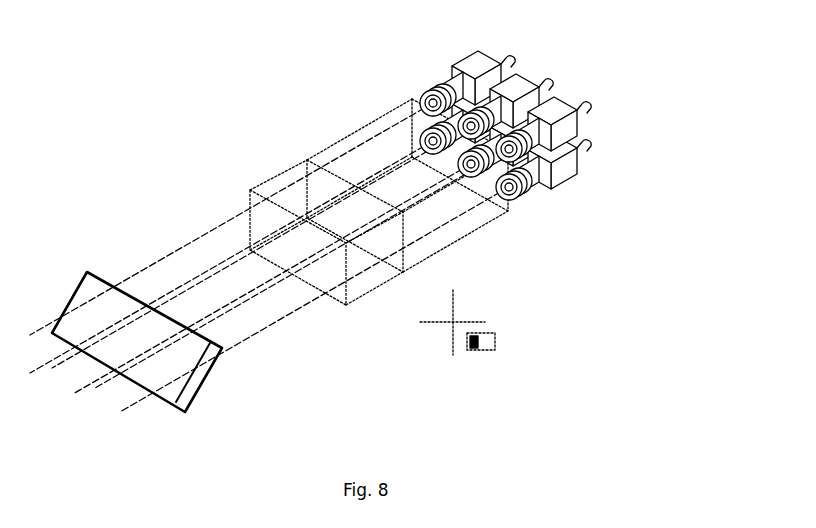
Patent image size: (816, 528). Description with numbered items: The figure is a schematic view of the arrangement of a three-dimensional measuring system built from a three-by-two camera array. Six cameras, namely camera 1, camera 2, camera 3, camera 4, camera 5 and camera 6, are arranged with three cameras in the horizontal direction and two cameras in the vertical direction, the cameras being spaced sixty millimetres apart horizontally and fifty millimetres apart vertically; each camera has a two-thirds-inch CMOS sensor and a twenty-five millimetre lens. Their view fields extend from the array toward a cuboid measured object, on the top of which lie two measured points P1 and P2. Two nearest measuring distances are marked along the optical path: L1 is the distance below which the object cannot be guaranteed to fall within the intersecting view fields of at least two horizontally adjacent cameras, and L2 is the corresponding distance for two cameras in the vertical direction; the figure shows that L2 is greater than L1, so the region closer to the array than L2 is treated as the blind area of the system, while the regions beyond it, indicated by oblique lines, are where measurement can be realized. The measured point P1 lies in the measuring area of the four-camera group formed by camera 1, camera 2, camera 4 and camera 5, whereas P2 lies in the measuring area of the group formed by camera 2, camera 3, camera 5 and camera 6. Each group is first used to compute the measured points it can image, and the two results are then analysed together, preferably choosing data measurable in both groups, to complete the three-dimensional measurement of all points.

The camera camera1 is at (470, 68).
The camera camera2 is at (518, 90).
The camera camera3 is at (560, 110).
The camera camera4 is at (415, 125).
The camera camera5 is at (482, 180).
The camera camera6 is at (540, 196).
The measured point P1 is at (137, 318).
The measured point P2 is at (218, 352).
The nearest measuring distance in the horizontal direction L1 is at (407, 202).
The nearest measuring distance in the vertical direction L2 is at (326, 250).